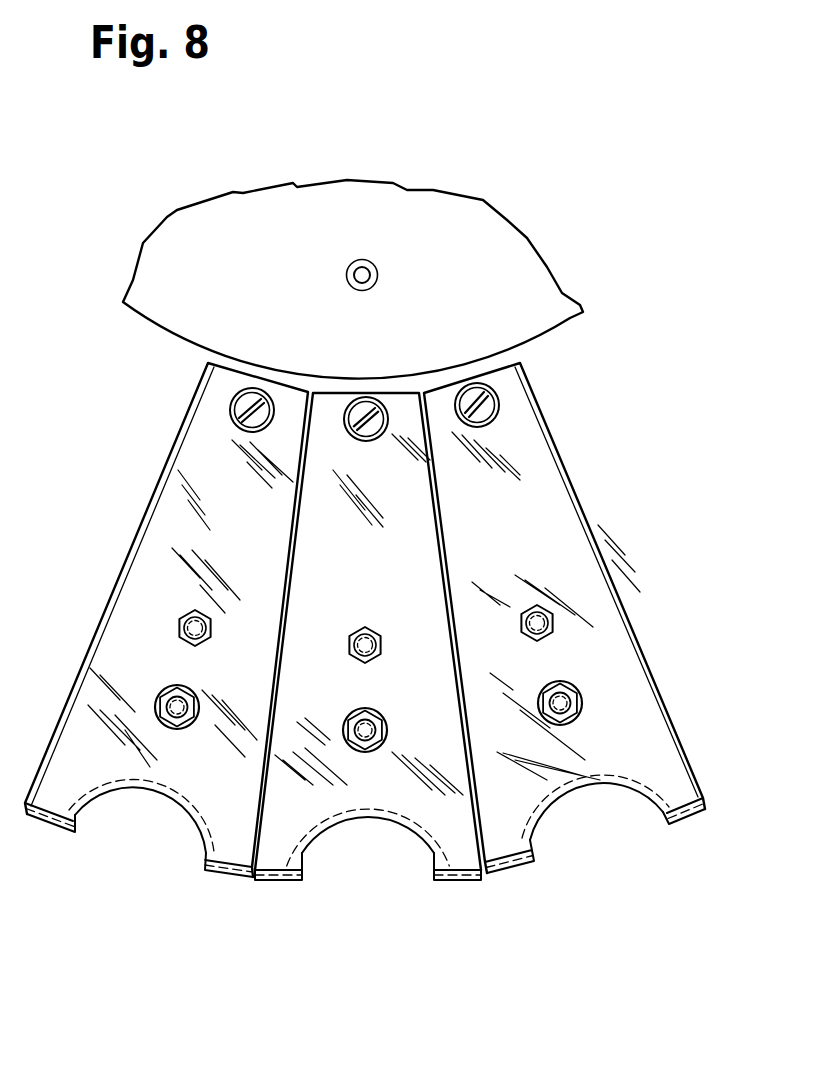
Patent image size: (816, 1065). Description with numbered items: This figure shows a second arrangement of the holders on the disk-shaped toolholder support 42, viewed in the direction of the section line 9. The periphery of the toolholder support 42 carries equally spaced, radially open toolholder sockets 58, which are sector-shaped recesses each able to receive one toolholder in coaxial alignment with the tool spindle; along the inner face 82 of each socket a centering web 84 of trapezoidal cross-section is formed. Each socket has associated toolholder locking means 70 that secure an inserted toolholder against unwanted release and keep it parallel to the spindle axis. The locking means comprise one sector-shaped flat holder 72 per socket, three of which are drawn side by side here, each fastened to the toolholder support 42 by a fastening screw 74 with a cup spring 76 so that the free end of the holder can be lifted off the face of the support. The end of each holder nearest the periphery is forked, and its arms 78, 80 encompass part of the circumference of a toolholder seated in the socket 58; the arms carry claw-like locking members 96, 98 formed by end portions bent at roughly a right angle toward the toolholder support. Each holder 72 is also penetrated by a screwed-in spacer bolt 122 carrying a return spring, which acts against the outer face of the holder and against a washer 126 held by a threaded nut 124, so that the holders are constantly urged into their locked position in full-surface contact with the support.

The section line 9- 9 is at (362, 137).
The toolholder support 42 is at (515, 357).
The toolholder socket 58 is at (368, 862).
The toolholder locking means 70 is at (400, 433).
The holder 72 is at (243, 589).
The fastening screw 74 is at (363, 436).
The cup spring 76 is at (343, 421).
The fork arm 78 is at (287, 835).
The fork arm 80 is at (453, 830).
The inner face 82 is at (93, 798).
The centering web 84 is at (183, 802).
The claw-like locking member 96 is at (283, 879).
The claw-like locking member 98 is at (452, 879).
The spacer bolt 122 is at (346, 721).
The threaded nut 124 is at (378, 721).
The washer 126 is at (379, 748).